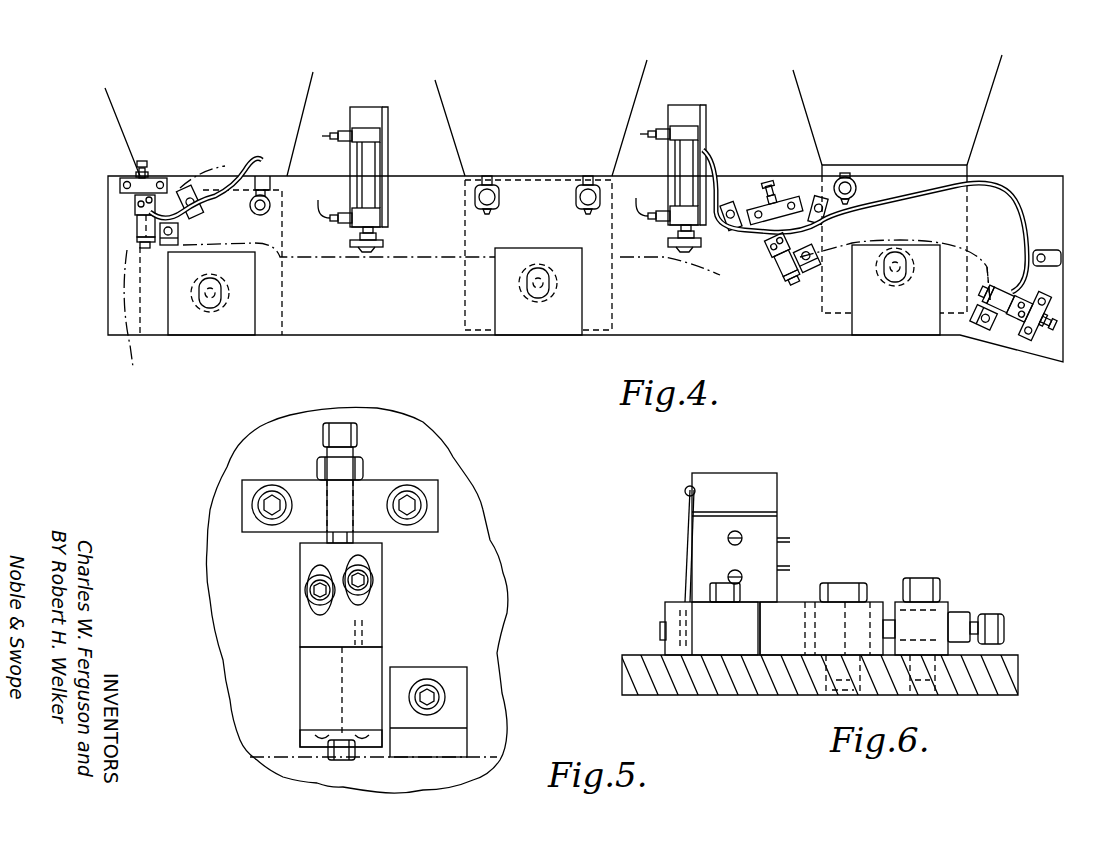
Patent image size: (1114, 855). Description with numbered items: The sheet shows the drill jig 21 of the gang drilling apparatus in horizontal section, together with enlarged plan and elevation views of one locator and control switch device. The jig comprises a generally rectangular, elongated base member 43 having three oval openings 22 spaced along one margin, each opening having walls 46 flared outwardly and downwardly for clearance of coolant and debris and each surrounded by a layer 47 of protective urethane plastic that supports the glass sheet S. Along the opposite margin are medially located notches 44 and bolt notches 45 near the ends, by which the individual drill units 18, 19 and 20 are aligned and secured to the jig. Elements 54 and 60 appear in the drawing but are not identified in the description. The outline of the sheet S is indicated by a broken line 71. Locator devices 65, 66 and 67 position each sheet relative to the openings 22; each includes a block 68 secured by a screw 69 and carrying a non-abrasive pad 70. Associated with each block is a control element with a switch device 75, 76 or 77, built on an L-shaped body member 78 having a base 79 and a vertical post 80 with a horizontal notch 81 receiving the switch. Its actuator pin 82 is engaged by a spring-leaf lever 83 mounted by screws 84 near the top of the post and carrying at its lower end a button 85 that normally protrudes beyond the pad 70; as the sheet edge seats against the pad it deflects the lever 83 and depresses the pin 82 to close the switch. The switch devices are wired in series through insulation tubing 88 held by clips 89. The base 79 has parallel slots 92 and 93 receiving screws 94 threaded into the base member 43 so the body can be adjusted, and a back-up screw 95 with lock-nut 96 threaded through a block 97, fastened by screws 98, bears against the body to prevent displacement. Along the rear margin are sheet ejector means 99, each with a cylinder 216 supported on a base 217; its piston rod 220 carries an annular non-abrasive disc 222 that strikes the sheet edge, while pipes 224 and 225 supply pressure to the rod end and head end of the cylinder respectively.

In FIG. 4, the drill unit 18 is at (140, 126).
In FIG. 4, the drill unit 19 is at (470, 131).
In FIG. 4, the drill unit 20 is at (832, 104).
In FIG. 4, the drill jig 21 is at (104, 187).
In FIG. 5, the drill jig 21 is at (221, 463).
In FIG. 6, the drill jig 21 is at (614, 675).
In FIG. 4, the openings 22 is at (213, 302).
In FIG. 4, the base member 43 is at (118, 210).
In FIG. 5, the base member 43 is at (228, 498).
In FIG. 6, the base member 43 is at (684, 676).
In FIG. 4, the notches 44 is at (489, 184).
In FIG. 4, the bolt notches 45 is at (272, 183).
In FIG. 4, the walls 46 is at (232, 286).
In FIG. 4, the layer of protective material 47 is at (192, 322).
In FIG. 4, the housing 54 is at (292, 304).
In FIG. 4, the fitting 60 is at (261, 215).
In FIG. 4, the locator device 65 is at (126, 219).
In FIG. 4, the locator device 66 is at (788, 185).
In FIG. 4, the locator device 67 is at (995, 330).
In FIG. 4, the block 68 is at (180, 232).
In FIG. 5, the block 68 is at (432, 675).
In FIG. 6, the block 68 is at (745, 617).
In FIG. 5, the screw 69 is at (435, 690).
In FIG. 6, the screw 69 is at (725, 602).
In FIG. 4, the pad 70 is at (184, 267).
In FIG. 5, the pad 70 is at (431, 745).
In FIG. 6, the pad 70 is at (672, 608).
In FIG. 4, the broken line 71 is at (415, 258).
In FIG. 5, the broken line 71 is at (285, 760).
In FIG. 4, the switch device 75 is at (142, 230).
In FIG. 4, the switch device 76 is at (765, 268).
In FIG. 4, the switch device 77 is at (995, 264).
In FIG. 4, the L-shaped body member 78 is at (1026, 268).
In FIG. 5, the L-shaped body member 78 is at (291, 644).
In FIG. 6, the L-shaped body member 78 is at (786, 483).
In FIG. 4, the base 79 is at (145, 205).
In FIG. 5, the base 79 is at (316, 624).
In FIG. 6, the base 79 is at (796, 615).
In FIG. 4, the post 80 is at (146, 226).
In FIG. 5, the post 80 is at (312, 673).
In FIG. 6, the post 80 is at (755, 504).
In FIG. 5, the notch 81 is at (329, 676).
In FIG. 6, the notch 81 is at (723, 498).
In FIG. 6, the actuator pin 82 is at (688, 555).
In FIG. 4, the spring-leaf lever 83 is at (142, 240).
In FIG. 5, the spring-leaf lever 83 is at (298, 735).
In FIG. 6, the spring-leaf lever 83 is at (686, 572).
In FIG. 5, the screws 84 is at (328, 728).
In FIG. 6, the screws 84 is at (684, 491).
In FIG. 4, the button 85 is at (146, 248).
In FIG. 5, the button 85 is at (341, 750).
In FIG. 6, the button 85 is at (660, 630).
In FIG. 4, the insulation tubing 88 is at (248, 163).
In FIG. 4, the clips 89 is at (189, 186).
In FIG. 5, the slot 92 is at (312, 568).
In FIG. 6, the slot 92 is at (808, 636).
In FIG. 5, the slot 93 is at (368, 562).
In FIG. 6, the slot 93 is at (812, 664).
In FIG. 5, the screws 94 is at (305, 588).
In FIG. 6, the screws 94 is at (843, 585).
In FIG. 4, the back-up screw 95 is at (144, 161).
In FIG. 5, the back-up screw 95 is at (340, 440).
In FIG. 6, the back-up screw 95 is at (1004, 625).
In FIG. 4, the lock-nut 96 is at (137, 172).
In FIG. 5, the lock-nut 96 is at (345, 470).
In FIG. 6, the lock-nut 96 is at (962, 618).
In FIG. 4, the block 97 is at (138, 173).
In FIG. 5, the block 97 is at (312, 488).
In FIG. 6, the block 97 is at (942, 608).
In FIG. 5, the screws 98 is at (272, 492).
In FIG. 6, the screws 98 is at (922, 590).
In FIG. 4, the sheet ejector means 99 is at (372, 94).
In FIG. 4, the cylinder 216 is at (365, 175).
In FIG. 4, the base 217 is at (386, 132).
In FIG. 4, the piston rod 220 is at (376, 231).
In FIG. 4, the annular disc 222 is at (367, 250).
In FIG. 4, the pipes 224 is at (326, 222).
In FIG. 4, the pipes 225 is at (336, 131).
In FIG. 4, the glass sheet S is at (125, 324).